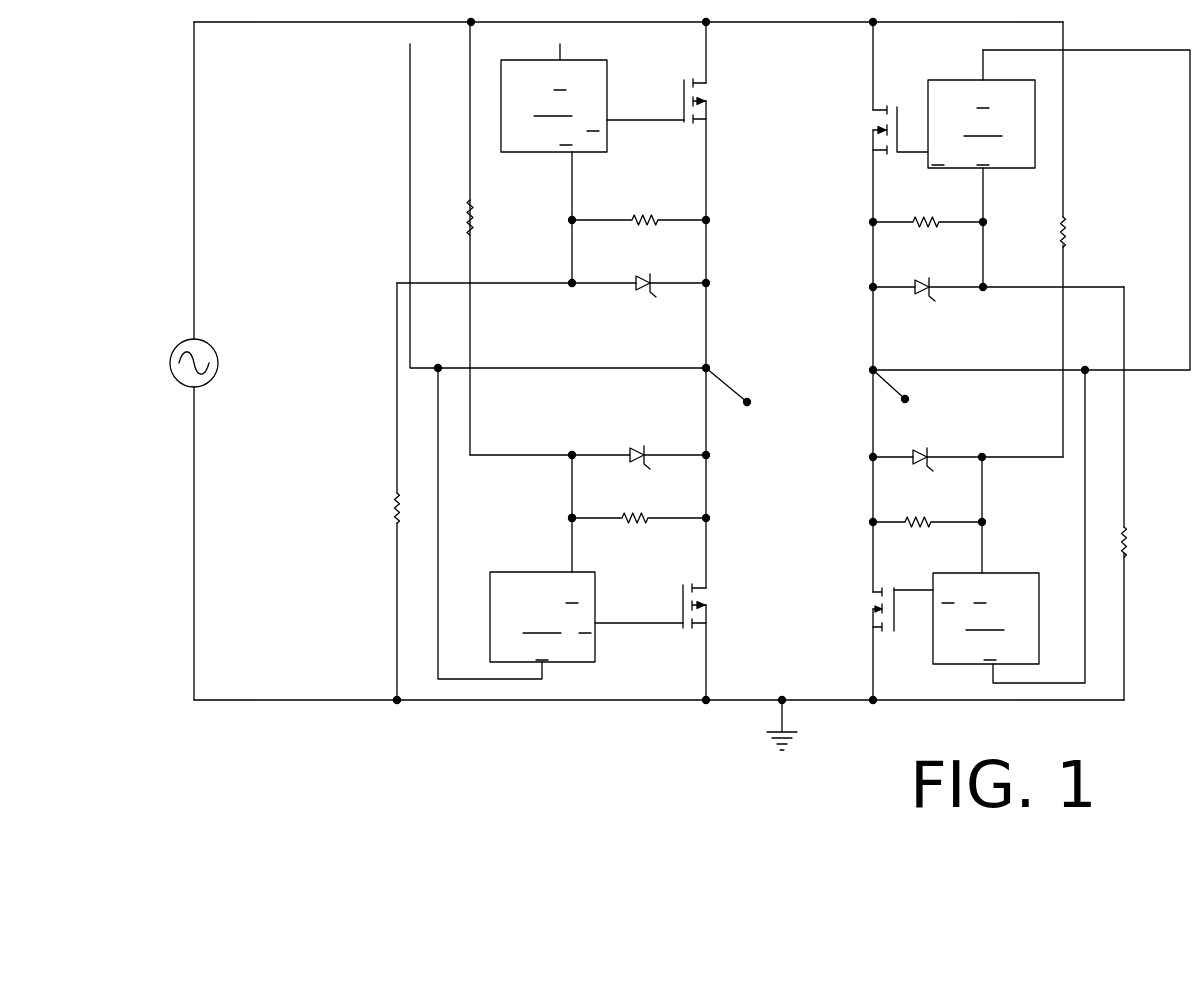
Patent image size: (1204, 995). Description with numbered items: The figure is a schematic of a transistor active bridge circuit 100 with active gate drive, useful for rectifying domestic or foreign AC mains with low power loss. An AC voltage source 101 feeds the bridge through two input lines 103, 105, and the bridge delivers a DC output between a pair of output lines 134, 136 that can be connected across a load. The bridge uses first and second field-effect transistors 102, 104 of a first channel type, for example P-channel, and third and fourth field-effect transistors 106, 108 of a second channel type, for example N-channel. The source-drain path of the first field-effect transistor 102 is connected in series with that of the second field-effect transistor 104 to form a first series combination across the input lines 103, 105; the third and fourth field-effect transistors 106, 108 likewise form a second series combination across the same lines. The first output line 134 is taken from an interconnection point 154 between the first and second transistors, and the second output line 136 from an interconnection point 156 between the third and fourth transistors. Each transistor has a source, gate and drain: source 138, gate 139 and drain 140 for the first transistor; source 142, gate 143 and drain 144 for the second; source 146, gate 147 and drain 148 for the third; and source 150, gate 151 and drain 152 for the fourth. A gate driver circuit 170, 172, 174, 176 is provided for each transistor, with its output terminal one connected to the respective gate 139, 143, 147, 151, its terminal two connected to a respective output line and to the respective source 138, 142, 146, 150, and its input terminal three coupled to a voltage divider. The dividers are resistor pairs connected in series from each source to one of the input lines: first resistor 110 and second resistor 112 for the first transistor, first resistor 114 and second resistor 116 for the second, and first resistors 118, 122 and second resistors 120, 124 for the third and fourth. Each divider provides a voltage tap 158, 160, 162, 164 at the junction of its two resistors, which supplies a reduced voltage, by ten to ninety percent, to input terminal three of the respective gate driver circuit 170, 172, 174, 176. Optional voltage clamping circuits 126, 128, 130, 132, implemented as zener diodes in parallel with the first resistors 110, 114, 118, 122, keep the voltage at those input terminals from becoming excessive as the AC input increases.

The transistor active bridge circuit 100 is at (297, 150).
The AC voltage source 101 is at (162, 332).
The first field-effect transistor 102 is at (694, 113).
The input line 103 is at (259, 22).
The second field-effect transistor 104 is at (686, 617).
The input line 105 is at (274, 697).
The third field-effect transistor 106 is at (875, 131).
The fourth field-effect transistor 108 is at (866, 599).
The first resistor 110 is at (632, 220).
The second resistor 112 is at (394, 496).
The first resistor 114 is at (622, 518).
The second resistor 116 is at (466, 213).
The first resistor 118 is at (924, 220).
The second resistor 120 is at (1126, 523).
The first resistor 122 is at (920, 516).
The second resistor 124 is at (1064, 216).
The voltage clamping circuit 126 is at (640, 280).
The voltage clamping circuit 128 is at (632, 450).
The voltage clamping circuit 130 is at (912, 283).
The voltage clamping circuit 132 is at (902, 452).
The output line 134 is at (724, 384).
The output line 136 is at (890, 384).
The source terminal 138 is at (708, 146).
The gate terminal 139 is at (680, 124).
The drain terminal 140 is at (708, 84).
The source terminal 142 is at (707, 582).
The gate terminal 143 is at (665, 630).
The drain terminal 144 is at (707, 634).
The source terminal 146 is at (873, 163).
The gate terminal 147 is at (906, 158).
The drain terminal 148 is at (874, 108).
The source terminal 150 is at (868, 590).
The gate terminal 151 is at (912, 590).
The drain terminal 152 is at (872, 634).
The interconnection point 154 is at (688, 354).
The interconnection point 156 is at (858, 367).
The voltage tap 158 is at (565, 212).
The voltage tap 160 is at (550, 530).
The voltage tap 162 is at (994, 212).
The voltage tap 164 is at (1002, 521).
The gate driver circuit 170 is at (592, 163).
The gate driver circuit 172 is at (586, 617).
The gate driver circuit 174 is at (981, 168).
The gate driver circuit 176 is at (966, 618).